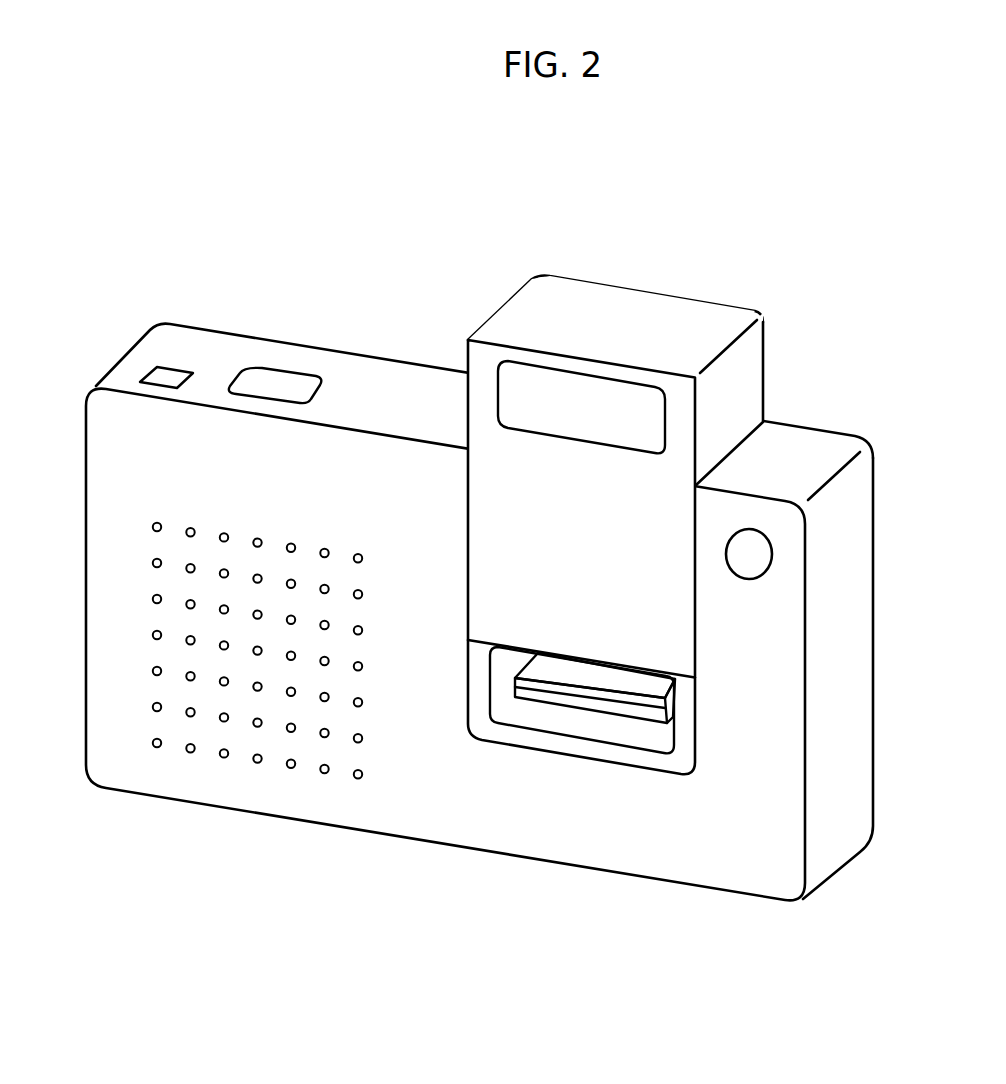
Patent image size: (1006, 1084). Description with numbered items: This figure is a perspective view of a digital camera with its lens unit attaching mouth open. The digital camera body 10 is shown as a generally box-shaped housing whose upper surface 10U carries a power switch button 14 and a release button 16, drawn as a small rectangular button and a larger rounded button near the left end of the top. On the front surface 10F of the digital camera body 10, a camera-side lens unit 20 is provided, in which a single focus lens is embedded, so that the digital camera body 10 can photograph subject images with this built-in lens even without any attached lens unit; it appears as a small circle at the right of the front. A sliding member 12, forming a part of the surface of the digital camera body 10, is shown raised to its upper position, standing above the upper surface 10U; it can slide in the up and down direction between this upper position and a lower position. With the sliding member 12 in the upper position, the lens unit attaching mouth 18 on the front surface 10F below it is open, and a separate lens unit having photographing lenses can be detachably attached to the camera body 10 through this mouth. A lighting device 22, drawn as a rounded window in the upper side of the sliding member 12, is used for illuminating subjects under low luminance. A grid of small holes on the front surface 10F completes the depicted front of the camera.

The digital camera body 10 is at (543, 566).
The front surface 10F is at (418, 802).
The upper surface 10U is at (805, 450).
The sliding member 12 is at (615, 579).
The power switch button 14 is at (167, 380).
The release button 16 is at (273, 383).
The lens unit attaching mouth 18 is at (573, 723).
The camera-side lens unit 20 is at (758, 555).
The lighting device 22 is at (568, 400).